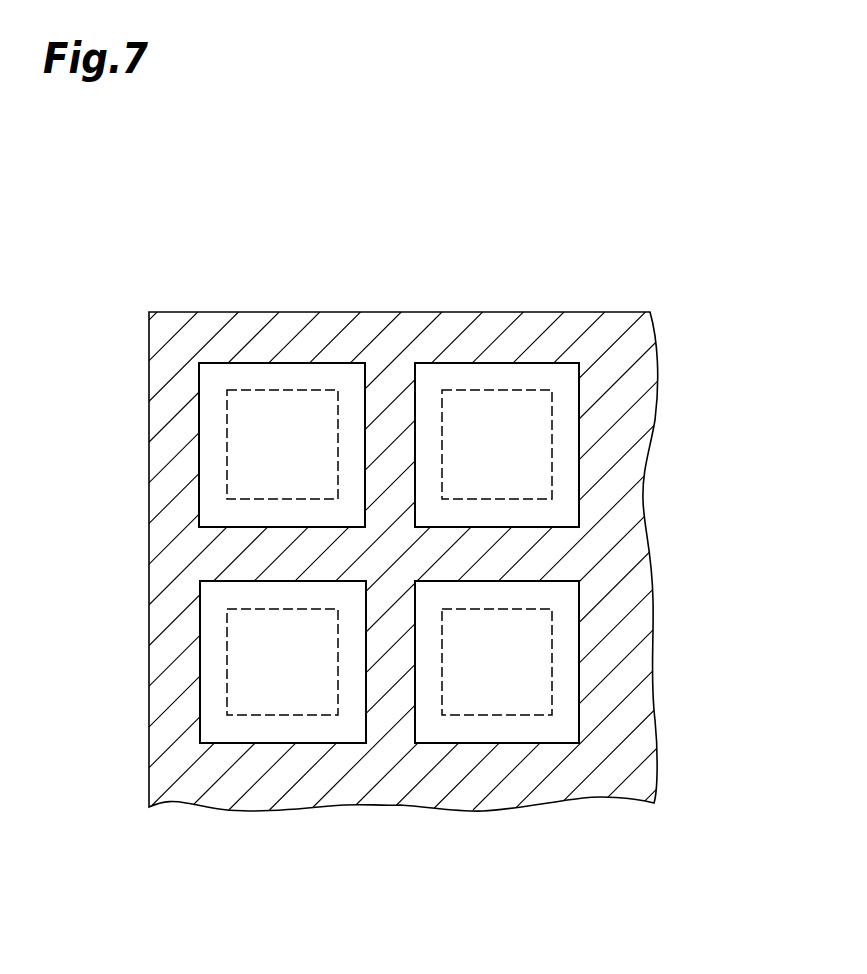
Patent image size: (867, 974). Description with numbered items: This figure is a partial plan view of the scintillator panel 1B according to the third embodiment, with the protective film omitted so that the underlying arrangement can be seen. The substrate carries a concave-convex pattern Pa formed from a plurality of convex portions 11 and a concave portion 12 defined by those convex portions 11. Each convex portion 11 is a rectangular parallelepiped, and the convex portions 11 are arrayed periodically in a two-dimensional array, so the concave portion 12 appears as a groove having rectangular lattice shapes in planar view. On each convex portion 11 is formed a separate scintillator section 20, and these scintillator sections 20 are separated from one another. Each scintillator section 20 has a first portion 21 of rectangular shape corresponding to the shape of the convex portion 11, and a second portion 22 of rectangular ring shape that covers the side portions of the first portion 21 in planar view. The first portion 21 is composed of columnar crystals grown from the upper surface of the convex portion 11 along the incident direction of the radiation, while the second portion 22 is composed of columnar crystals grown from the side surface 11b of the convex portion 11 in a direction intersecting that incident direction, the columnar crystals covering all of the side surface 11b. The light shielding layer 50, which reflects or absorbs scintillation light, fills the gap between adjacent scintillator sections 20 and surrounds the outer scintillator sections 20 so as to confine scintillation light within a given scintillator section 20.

The scintillator panel 1B is at (707, 242).
The convex portion 11 is at (308, 422).
The side surface of convex portion 11b is at (282, 390).
The concave portion 12 is at (393, 393).
The scintillator section 20 is at (463, 556).
The first portion 21 is at (248, 422).
The second portion 22 is at (253, 378).
The light shielding layer 50 is at (433, 557).
The concave-convex pattern Pa is at (347, 226).